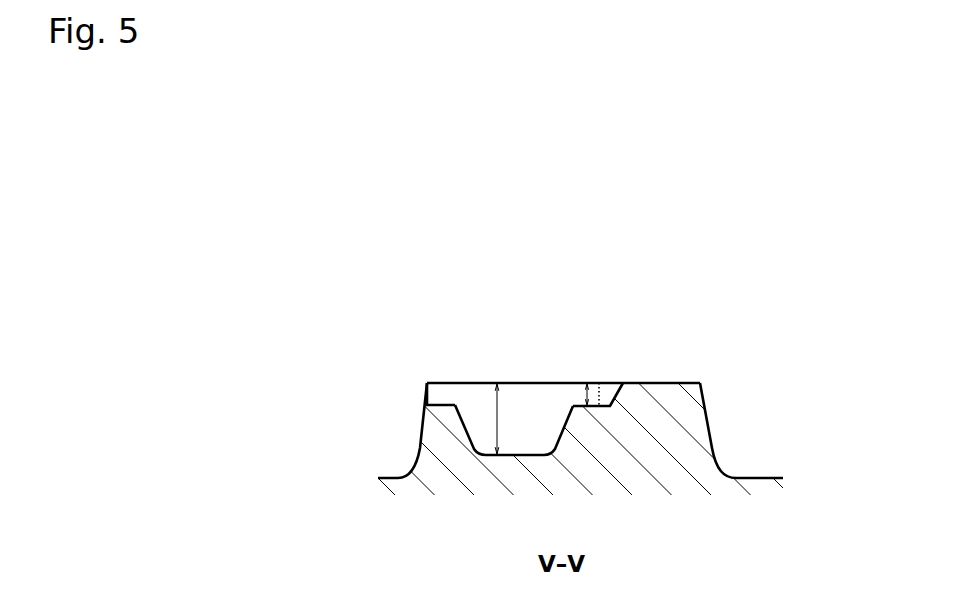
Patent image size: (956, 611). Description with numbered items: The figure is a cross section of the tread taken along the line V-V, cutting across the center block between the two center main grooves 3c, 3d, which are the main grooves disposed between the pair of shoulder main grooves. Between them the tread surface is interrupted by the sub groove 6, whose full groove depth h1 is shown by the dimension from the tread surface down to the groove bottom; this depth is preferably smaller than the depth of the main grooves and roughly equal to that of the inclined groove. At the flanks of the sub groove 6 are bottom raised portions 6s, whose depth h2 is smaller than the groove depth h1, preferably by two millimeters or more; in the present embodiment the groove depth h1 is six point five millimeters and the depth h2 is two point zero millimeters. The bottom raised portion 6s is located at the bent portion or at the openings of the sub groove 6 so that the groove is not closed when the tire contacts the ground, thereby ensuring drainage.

The center main groove 3c is at (393, 405).
The center main groove 3d is at (743, 407).
The sub groove 6 is at (518, 402).
The bottom raised portion 6s is at (440, 403).
The groove depth h1 is at (485, 419).
The depth h2 is at (574, 395).